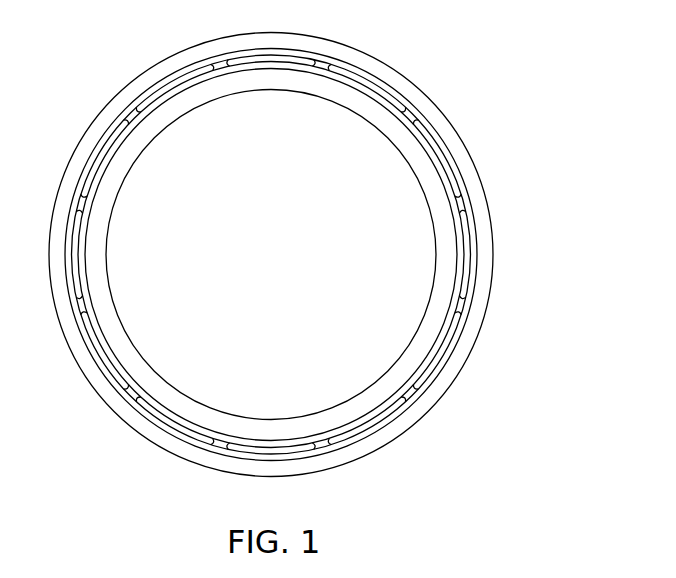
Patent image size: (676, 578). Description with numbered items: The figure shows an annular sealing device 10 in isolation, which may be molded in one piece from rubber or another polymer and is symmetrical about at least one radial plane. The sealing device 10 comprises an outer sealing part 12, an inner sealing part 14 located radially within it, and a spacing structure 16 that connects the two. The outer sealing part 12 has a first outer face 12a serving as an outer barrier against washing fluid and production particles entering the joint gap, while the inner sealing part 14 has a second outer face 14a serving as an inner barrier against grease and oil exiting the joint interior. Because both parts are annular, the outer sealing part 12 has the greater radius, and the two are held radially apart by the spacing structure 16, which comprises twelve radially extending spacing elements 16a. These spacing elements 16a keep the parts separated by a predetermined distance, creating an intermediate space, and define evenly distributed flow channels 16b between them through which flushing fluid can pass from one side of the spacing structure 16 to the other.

The sealing device 10 is at (322, 241).
The outer sealing part 12 is at (322, 241).
The first outer face 12a is at (391, 54).
The inner sealing part 14 is at (271, 255).
The second outer face 14a is at (346, 120).
The spacing structure 16 is at (323, 254).
The spacing elements 16a is at (412, 395).
The flow channels 16b is at (435, 362).